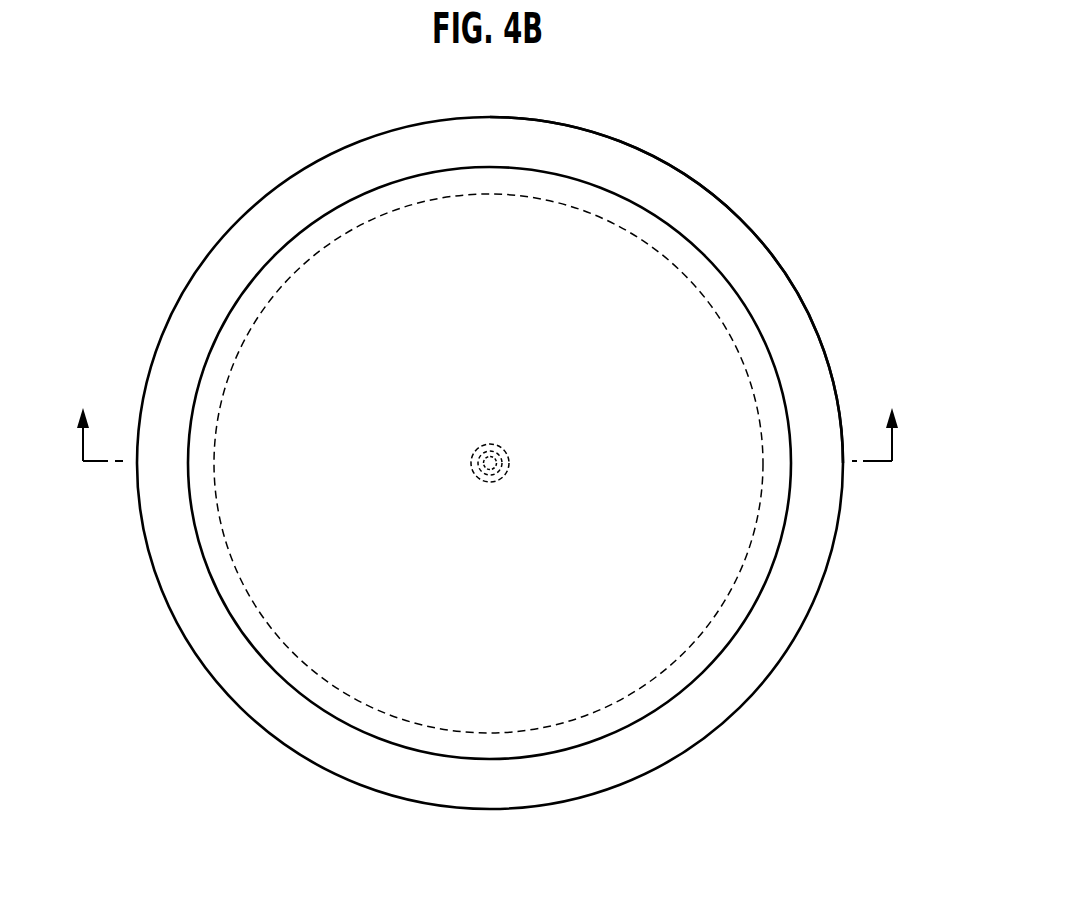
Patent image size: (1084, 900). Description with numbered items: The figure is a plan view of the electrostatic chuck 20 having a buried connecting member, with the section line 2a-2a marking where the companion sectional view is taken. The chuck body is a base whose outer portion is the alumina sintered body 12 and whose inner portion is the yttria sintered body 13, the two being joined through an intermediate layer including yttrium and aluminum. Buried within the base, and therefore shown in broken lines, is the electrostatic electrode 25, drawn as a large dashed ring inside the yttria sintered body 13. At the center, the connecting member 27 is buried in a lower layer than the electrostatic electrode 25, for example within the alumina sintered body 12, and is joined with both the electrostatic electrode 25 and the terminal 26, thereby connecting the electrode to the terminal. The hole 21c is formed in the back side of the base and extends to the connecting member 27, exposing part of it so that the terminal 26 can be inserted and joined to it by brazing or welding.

The electrostatic chuck 20 is at (760, 178).
The alumina sintered body 12 is at (827, 540).
The yttria sintered body 13 is at (757, 572).
The electrostatic electrode 25 is at (700, 635).
The connecting member 27 is at (495, 443).
The terminal 26 is at (510, 460).
The hole 21c is at (475, 466).
The line 2a- 2a is at (490, 417).